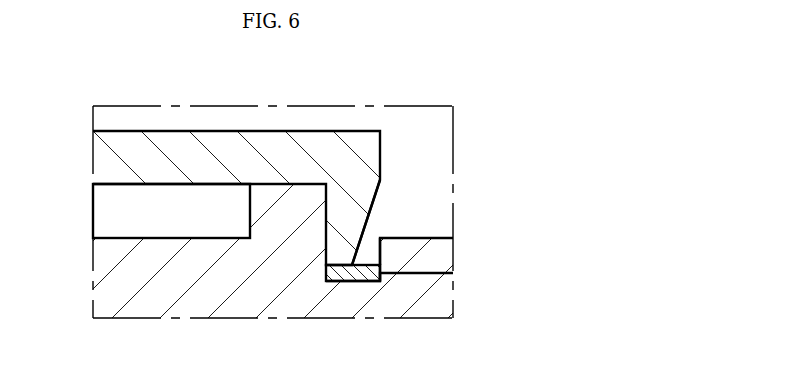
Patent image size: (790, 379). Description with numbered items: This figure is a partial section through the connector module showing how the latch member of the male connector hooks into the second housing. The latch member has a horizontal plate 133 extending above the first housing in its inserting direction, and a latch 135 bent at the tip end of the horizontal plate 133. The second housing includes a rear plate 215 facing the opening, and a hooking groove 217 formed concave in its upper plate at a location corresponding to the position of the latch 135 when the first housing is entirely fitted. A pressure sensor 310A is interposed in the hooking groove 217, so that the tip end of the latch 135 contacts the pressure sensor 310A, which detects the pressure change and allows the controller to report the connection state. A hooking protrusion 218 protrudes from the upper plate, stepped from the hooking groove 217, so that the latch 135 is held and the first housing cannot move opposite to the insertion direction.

The horizontal plate 133 is at (168, 143).
The latch 135 is at (366, 213).
The rear plate 215 is at (167, 293).
The hooking groove 217 is at (374, 251).
The hooking protrusion 218 is at (260, 209).
The pressure sensor 310A is at (352, 282).